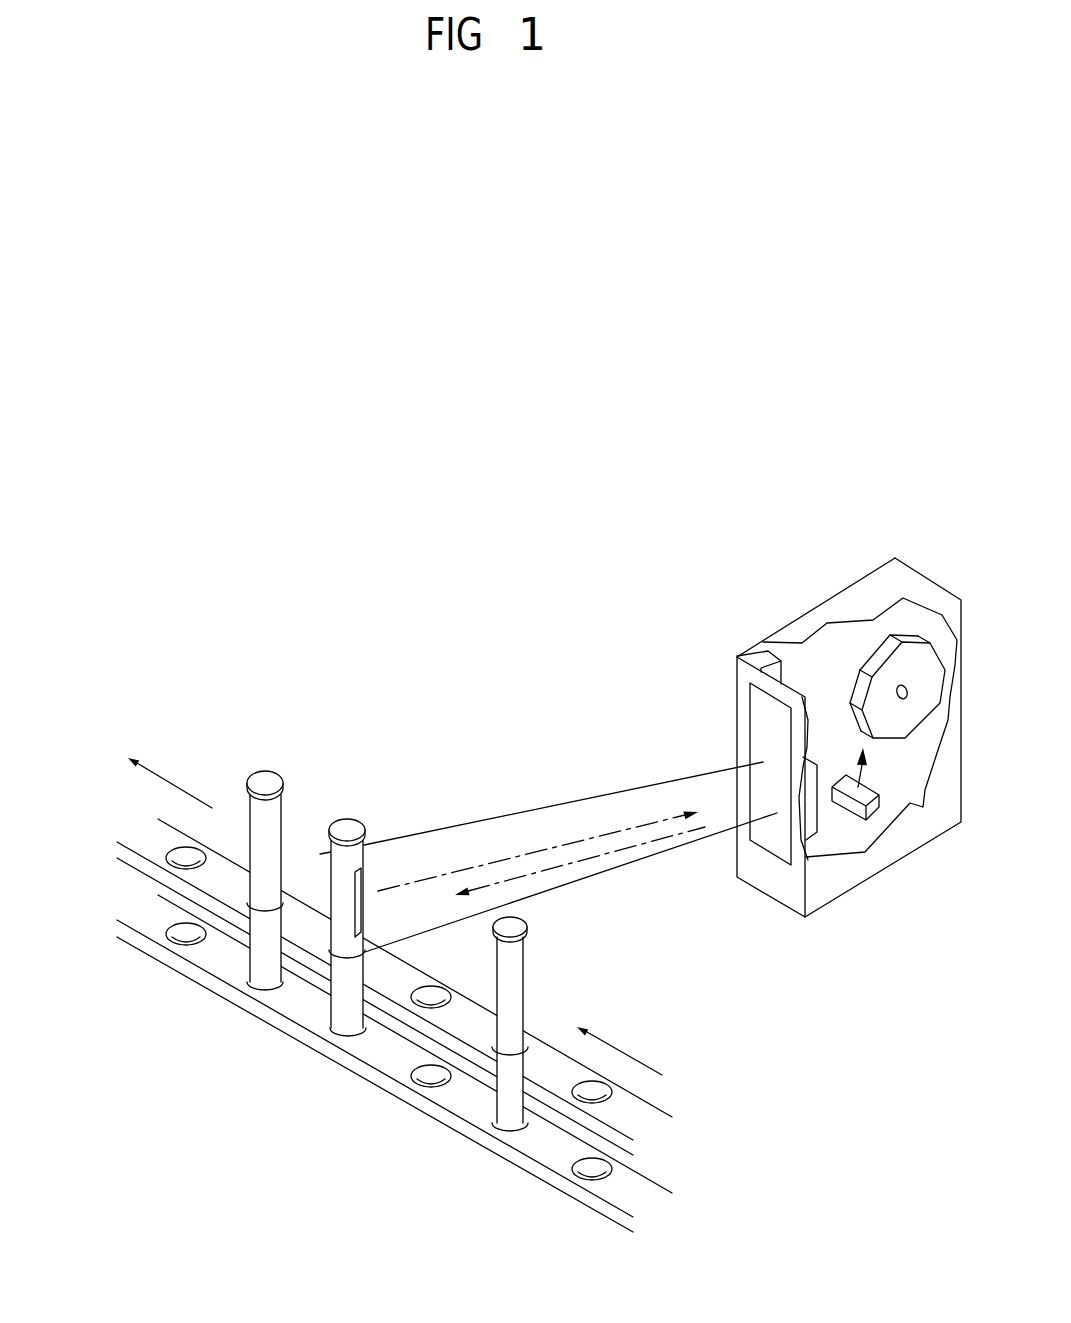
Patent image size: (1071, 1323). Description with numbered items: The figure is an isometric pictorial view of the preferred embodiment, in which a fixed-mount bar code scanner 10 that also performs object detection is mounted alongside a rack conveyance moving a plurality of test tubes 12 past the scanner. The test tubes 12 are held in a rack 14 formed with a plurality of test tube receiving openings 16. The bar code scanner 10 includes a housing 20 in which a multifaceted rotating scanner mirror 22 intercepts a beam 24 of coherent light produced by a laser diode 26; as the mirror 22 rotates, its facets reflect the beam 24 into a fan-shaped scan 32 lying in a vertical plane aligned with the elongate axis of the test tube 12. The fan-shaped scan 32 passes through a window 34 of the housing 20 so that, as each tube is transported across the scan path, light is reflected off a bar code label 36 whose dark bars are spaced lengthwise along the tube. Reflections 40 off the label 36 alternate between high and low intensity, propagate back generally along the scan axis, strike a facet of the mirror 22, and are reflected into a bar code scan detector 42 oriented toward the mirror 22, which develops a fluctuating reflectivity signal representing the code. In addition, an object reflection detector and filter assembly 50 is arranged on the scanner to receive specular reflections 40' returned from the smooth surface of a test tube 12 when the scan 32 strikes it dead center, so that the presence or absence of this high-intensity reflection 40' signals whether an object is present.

The bar code scanner 10 is at (900, 546).
The test tubes 12 is at (277, 760).
The rack 14 is at (310, 978).
The test tube receiving openings 16 is at (431, 989).
The housing 20 is at (817, 598).
The multifaceted rotating scanner mirror 22 is at (947, 699).
The beam 24 is at (877, 769).
The laser diode 26 is at (888, 811).
The fan-shaped scan 32 is at (493, 809).
The window 34 is at (740, 719).
The bar code label 36 is at (372, 916).
The reflections 40 is at (538, 852).
The reflections off the object 40' is at (580, 870).
The bar code scan detector 42 is at (756, 654).
The object reflection detector and filter assembly 50 is at (818, 838).